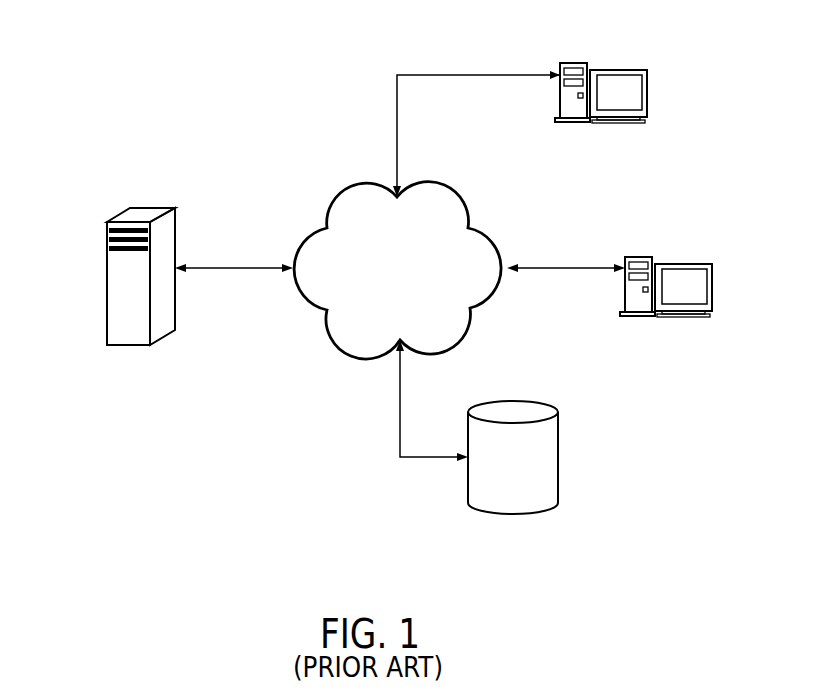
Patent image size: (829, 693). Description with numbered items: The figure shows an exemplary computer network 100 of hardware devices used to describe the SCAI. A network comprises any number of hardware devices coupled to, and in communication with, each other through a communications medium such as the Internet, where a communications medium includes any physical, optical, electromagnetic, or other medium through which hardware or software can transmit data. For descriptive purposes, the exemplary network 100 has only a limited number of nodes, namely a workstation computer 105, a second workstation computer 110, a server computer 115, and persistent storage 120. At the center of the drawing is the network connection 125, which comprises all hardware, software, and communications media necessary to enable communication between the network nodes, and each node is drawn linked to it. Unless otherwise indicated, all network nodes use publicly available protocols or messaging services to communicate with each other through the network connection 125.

The exemplary network 100 is at (217, 119).
The workstation computer 105 is at (620, 70).
The workstation computer 110 is at (684, 262).
The server computer 115 is at (107, 247).
The persistent storage 120 is at (558, 448).
The network connection 125 is at (418, 283).